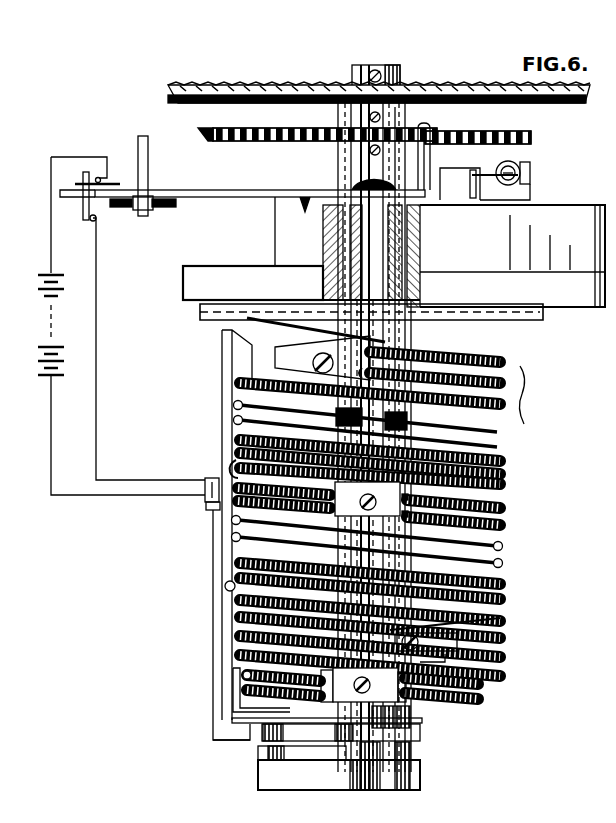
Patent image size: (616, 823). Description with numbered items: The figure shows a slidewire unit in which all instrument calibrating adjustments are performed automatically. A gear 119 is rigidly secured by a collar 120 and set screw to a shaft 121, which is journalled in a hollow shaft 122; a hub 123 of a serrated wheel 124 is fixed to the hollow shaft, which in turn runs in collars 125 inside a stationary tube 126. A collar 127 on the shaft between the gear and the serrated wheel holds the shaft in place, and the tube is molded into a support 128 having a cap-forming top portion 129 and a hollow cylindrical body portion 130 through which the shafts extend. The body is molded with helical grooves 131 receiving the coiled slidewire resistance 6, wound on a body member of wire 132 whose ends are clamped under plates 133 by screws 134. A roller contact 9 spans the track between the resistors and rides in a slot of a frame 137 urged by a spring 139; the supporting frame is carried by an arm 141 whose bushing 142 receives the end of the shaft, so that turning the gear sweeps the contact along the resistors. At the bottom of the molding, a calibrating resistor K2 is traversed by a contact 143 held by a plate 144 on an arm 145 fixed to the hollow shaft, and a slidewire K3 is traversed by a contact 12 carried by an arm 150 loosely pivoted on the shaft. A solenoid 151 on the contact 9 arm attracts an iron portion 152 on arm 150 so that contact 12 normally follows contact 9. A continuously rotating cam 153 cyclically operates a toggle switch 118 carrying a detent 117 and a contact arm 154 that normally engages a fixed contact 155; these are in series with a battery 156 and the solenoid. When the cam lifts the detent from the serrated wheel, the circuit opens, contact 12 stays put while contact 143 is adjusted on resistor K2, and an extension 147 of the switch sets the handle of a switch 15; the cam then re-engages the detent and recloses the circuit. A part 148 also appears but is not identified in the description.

The slidewire resistance 6 is at (236, 384).
The slidewire contact 9 is at (228, 467).
The contact 12 is at (228, 587).
The switch 15 is at (515, 168).
The detent 117 is at (430, 161).
The toggle switch 118 is at (232, 189).
The gear 119 is at (446, 97).
The collar 120 is at (400, 68).
The shaft 121 is at (320, 261).
The hollow shaft 122 is at (336, 238).
The hub 123 is at (344, 154).
The serrated wheel 124 is at (213, 133).
The collars 125 is at (346, 179).
The stationary tube 126 is at (323, 211).
The collar 127 is at (344, 126).
The molded support 128 is at (416, 380).
The top portion 129 is at (185, 274).
The cylindrical body portion 130 is at (250, 325).
The helical grooves 131 is at (236, 421).
The body member of wire 132 is at (500, 618).
The plates 133 is at (447, 662).
The screws 134 is at (457, 644).
The frame 137 is at (228, 357).
The spring 139 is at (230, 470).
The arm 141 is at (318, 780).
The bushing 142 is at (382, 782).
The contact 143 is at (240, 681).
The plate 144 is at (240, 712).
The arm 145 is at (240, 742).
The extension 147 is at (452, 190).
The block 148 is at (270, 758).
The arm 150 is at (214, 642).
The solenoid 151 is at (204, 492).
The iron portion 152 is at (212, 514).
The cam 153 is at (148, 170).
The contact arm 154 is at (80, 185).
The fixed contact 155 is at (84, 216).
The battery 156 is at (44, 332).
The calibrating resistor K2 is at (480, 697).
The slidewire K3 is at (502, 552).